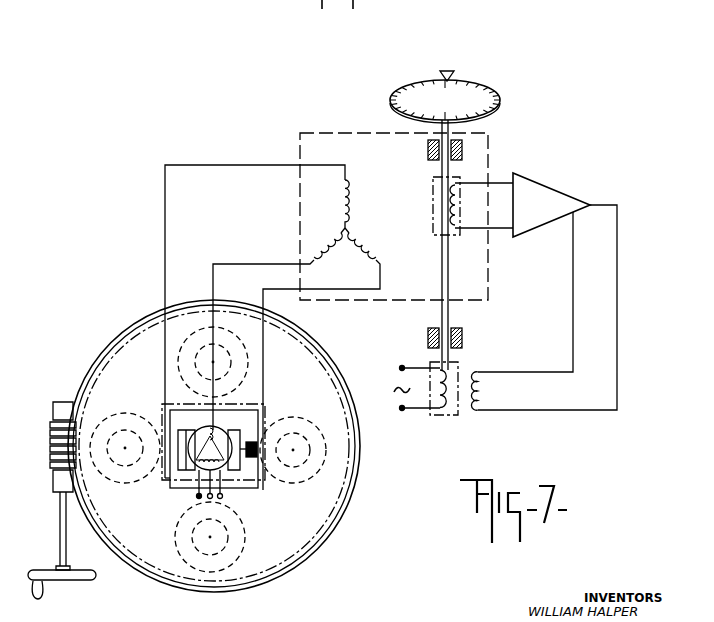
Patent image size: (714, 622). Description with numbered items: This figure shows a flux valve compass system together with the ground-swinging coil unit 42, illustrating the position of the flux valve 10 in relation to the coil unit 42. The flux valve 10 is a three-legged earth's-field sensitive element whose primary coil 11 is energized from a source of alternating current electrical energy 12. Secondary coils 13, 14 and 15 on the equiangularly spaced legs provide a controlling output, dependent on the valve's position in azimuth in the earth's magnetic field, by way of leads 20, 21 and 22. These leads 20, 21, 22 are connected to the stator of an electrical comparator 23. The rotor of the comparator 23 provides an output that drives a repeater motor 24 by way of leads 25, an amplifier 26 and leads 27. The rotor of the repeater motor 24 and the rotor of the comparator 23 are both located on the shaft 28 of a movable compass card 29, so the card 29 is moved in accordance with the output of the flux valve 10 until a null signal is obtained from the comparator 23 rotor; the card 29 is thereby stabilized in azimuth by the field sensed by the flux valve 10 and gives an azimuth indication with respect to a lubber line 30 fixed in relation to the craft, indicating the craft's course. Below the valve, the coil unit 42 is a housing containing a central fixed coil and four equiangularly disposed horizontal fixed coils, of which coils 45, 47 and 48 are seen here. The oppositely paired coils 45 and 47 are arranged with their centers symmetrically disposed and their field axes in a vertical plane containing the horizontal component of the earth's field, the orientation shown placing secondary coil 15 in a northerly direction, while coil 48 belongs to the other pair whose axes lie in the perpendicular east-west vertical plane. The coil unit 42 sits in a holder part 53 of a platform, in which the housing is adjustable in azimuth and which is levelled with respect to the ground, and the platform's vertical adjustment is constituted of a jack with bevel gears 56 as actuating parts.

The flux valve 10 is at (258, 412).
The primary coil 11 is at (228, 468).
The source of alternating current electrical energy 12 is at (200, 497).
The secondary coil 13 is at (165, 479).
The secondary coil 14 is at (254, 462).
The secondary coil 15 is at (210, 436).
The lead 20 is at (165, 252).
The lead 21 is at (213, 264).
The lead 22 is at (263, 290).
The electrical comparator 23 is at (488, 150).
The repeater motor 24 is at (482, 362).
The leads 25 is at (500, 187).
The amplifier 26 is at (540, 228).
The leads 27 is at (575, 284).
The shaft 28 is at (450, 288).
The compass card 29 is at (498, 96).
The lubber line 30 is at (450, 71).
The coil unit 42 is at (101, 351).
The horizontal fixed coil 45 is at (178, 366).
The horizontal fixed coil 47 is at (176, 546).
The horizontal fixed coil 48 is at (116, 481).
The holder part 53 is at (356, 486).
The bevel gears 56 is at (300, 486).